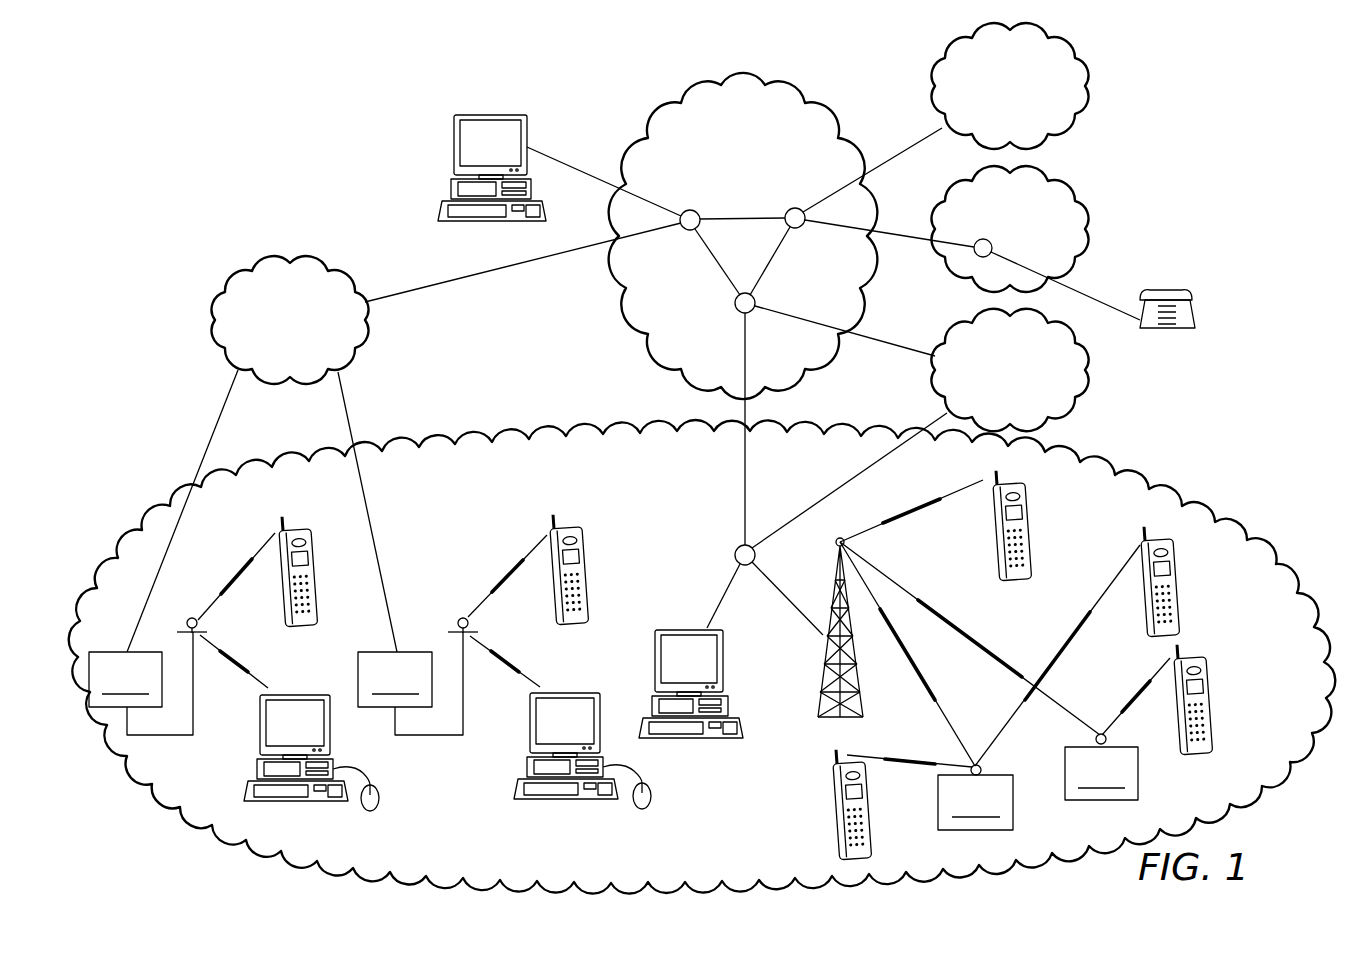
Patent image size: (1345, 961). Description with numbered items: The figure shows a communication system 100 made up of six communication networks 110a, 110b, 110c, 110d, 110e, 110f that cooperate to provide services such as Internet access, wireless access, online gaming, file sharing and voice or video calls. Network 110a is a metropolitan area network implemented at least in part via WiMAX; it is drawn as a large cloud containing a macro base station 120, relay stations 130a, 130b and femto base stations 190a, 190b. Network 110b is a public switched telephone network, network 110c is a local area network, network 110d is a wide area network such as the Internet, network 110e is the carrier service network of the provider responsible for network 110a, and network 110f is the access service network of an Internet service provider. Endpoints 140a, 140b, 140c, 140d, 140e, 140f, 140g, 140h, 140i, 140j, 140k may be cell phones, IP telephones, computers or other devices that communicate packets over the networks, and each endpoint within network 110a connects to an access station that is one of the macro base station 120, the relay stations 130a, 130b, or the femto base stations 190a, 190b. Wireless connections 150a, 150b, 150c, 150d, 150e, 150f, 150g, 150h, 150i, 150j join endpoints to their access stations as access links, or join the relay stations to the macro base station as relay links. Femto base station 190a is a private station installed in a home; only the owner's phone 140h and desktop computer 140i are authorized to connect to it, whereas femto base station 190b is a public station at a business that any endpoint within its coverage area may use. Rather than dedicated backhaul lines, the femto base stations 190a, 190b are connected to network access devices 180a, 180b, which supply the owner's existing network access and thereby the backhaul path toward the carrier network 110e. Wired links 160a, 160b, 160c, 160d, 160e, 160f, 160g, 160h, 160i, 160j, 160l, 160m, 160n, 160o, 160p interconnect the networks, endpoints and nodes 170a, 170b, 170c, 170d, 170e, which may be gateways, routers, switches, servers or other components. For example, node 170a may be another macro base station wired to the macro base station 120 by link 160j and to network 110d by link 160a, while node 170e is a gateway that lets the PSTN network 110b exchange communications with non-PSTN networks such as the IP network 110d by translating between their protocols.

The communication system 100 is at (337, 186).
The network (MAN) 110a is at (530, 418).
The network (PSTN) 110b is at (1084, 197).
The network (LAN) 110c is at (1093, 84).
The network (WAN) 110d is at (674, 90).
The carrier service network (CSN) 110e is at (1092, 372).
The access service network (ASN) 110f is at (208, 308).
The macro base station (MBS) 120 is at (820, 676).
The relay station (RS) 130a is at (975, 797).
The relay station (RS) 130b is at (1101, 767).
The endpoint 140a is at (832, 835).
The endpoint 140b is at (1180, 566).
The endpoint 140c is at (1032, 512).
The endpoint 140d is at (1214, 685).
The endpoint 140e is at (488, 115).
The endpoint 140f is at (1168, 284).
The endpoint 140g is at (733, 705).
The endpoint (mobile phone) 140h is at (300, 633).
The endpoint (desktop computer) 140i is at (255, 768).
The endpoint 140j is at (525, 768).
The endpoint 140k is at (577, 621).
The wireless connection 150a is at (1140, 692).
The wireless connection 150b is at (1093, 608).
The wireless connection 150c is at (930, 503).
The wireless connection 150d is at (933, 700).
The wireless connection 150e is at (1000, 661).
The wireless connection 150f is at (905, 764).
The wireless connection 150g is at (247, 566).
The wireless connection 150h is at (240, 667).
The wireless connection 150i is at (505, 662).
The wireless connection 150j is at (528, 555).
The wired link 160a is at (745, 496).
The wired link 160b is at (712, 260).
The wired link 160c is at (776, 260).
The wired link 160d is at (721, 600).
The wired link 160e is at (580, 166).
The wired link 160f is at (1100, 302).
The wired link 160g is at (905, 236).
The wired link 160h is at (903, 162).
The wired link 160i is at (748, 218).
The wired link 160j is at (789, 600).
The wired link 160l is at (890, 345).
The wired link 160m is at (823, 497).
The wired link 160n is at (350, 430).
The wired link 160o is at (530, 262).
The wired link 160p is at (218, 420).
The node 170a is at (735, 553).
The node 170b is at (736, 308).
The node 170c is at (686, 210).
The node 170d is at (797, 208).
The node (gateway) 170e is at (986, 240).
The network access device 180a is at (141, 683).
The network access device 180b is at (410, 683).
The femto base station (fBS) 190a is at (203, 629).
The femto base station (fBS) 190b is at (458, 620).